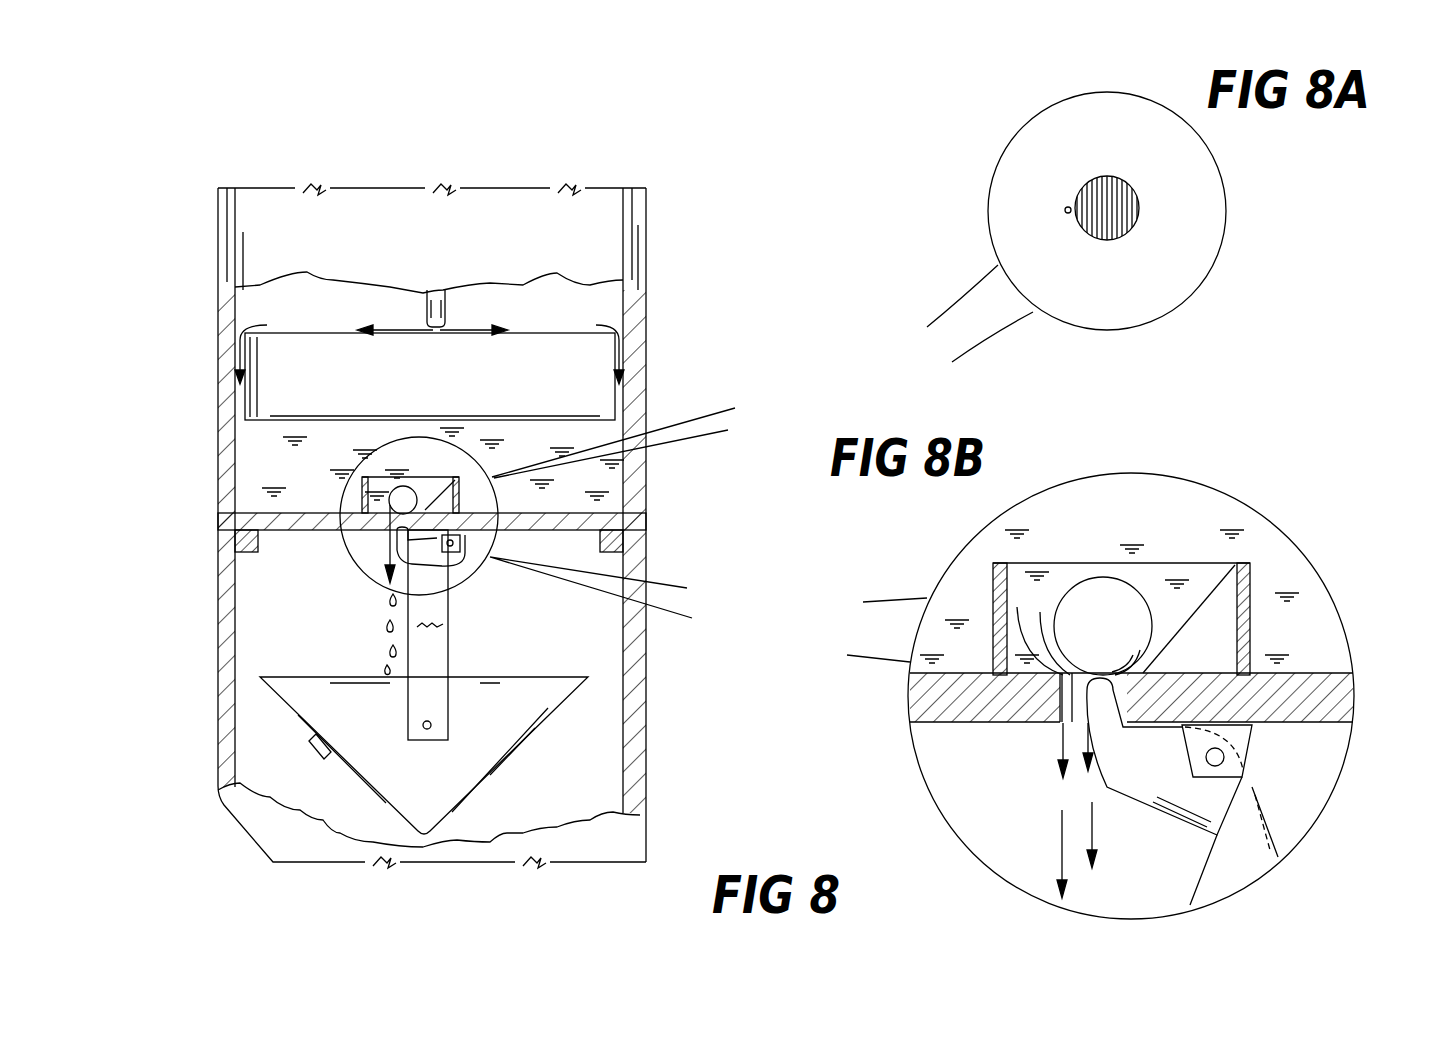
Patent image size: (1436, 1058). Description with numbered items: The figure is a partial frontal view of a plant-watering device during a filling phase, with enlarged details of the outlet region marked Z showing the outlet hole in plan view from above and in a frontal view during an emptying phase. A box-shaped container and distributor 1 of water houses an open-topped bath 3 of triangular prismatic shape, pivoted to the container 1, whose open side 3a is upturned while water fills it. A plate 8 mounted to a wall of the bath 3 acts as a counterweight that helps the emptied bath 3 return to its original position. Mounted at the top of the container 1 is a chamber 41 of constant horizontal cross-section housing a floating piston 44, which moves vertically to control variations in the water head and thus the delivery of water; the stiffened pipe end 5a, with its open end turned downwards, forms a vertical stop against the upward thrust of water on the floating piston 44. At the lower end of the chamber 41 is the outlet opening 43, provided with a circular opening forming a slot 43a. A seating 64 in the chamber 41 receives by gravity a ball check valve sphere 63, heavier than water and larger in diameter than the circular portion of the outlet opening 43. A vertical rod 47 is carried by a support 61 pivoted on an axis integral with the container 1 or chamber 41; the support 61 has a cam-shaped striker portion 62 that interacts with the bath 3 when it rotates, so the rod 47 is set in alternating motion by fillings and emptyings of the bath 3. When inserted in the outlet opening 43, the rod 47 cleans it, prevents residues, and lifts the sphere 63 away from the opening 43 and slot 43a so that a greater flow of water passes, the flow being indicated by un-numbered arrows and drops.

In FIG. 8, the container and distributor 1 is at (212, 678).
In FIG. 8, the bath 3 is at (330, 716).
In FIG. 8, the open side 3a is at (355, 662).
In FIG. 8, the pipe end 5a is at (438, 297).
In FIG. 8, the plate 8 is at (318, 753).
In FIG. 8, the chamber 41 is at (572, 308).
In FIG. 8A, the outlet opening 43 is at (1150, 209).
In FIG. 8A, the slot 43a is at (1066, 213).
In FIG. 8, the floating piston 44 is at (291, 391).
In FIG. 8B, the rod 47 is at (1103, 702).
In FIG. 8B, the support 61 is at (1260, 779).
In FIG. 8B, the striker portion 62 is at (1250, 788).
In FIG. 8B, the ball check valve sphere 63 is at (1105, 597).
In FIG. 8B, the seating 64 is at (1258, 590).
In FIG. 8, the detail region / pivot Z is at (500, 513).
In FIG. 8B, the detail region / pivot Z is at (1224, 757).